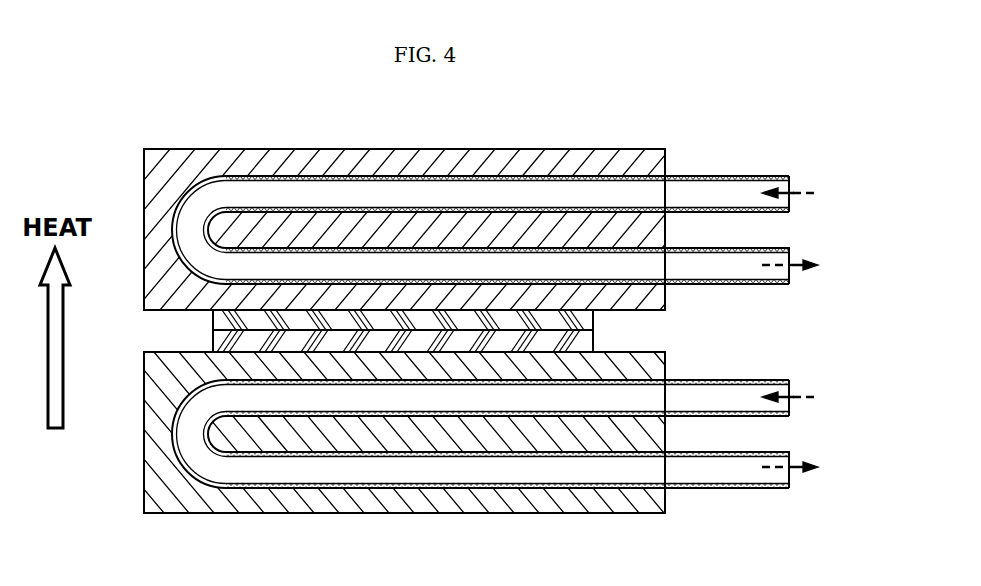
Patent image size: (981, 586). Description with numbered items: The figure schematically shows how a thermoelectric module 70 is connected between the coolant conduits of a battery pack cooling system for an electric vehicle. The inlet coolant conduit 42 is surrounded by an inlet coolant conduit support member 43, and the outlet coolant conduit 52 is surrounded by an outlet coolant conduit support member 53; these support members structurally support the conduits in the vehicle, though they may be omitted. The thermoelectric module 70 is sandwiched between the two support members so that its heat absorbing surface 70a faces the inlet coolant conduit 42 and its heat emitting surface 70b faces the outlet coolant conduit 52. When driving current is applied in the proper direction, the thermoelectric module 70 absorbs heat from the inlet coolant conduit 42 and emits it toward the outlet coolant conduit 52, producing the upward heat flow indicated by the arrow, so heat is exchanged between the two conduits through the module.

The outlet coolant conduit support member 53 is at (194, 158).
The outlet coolant conduit 52 is at (723, 178).
The thermoelectric module 70 is at (379, 329).
The heat absorbing surface 70a is at (213, 342).
The heat emitting surface 70b is at (213, 321).
The inlet coolant conduit 42 is at (723, 381).
The inlet coolant conduit support member 43 is at (193, 505).